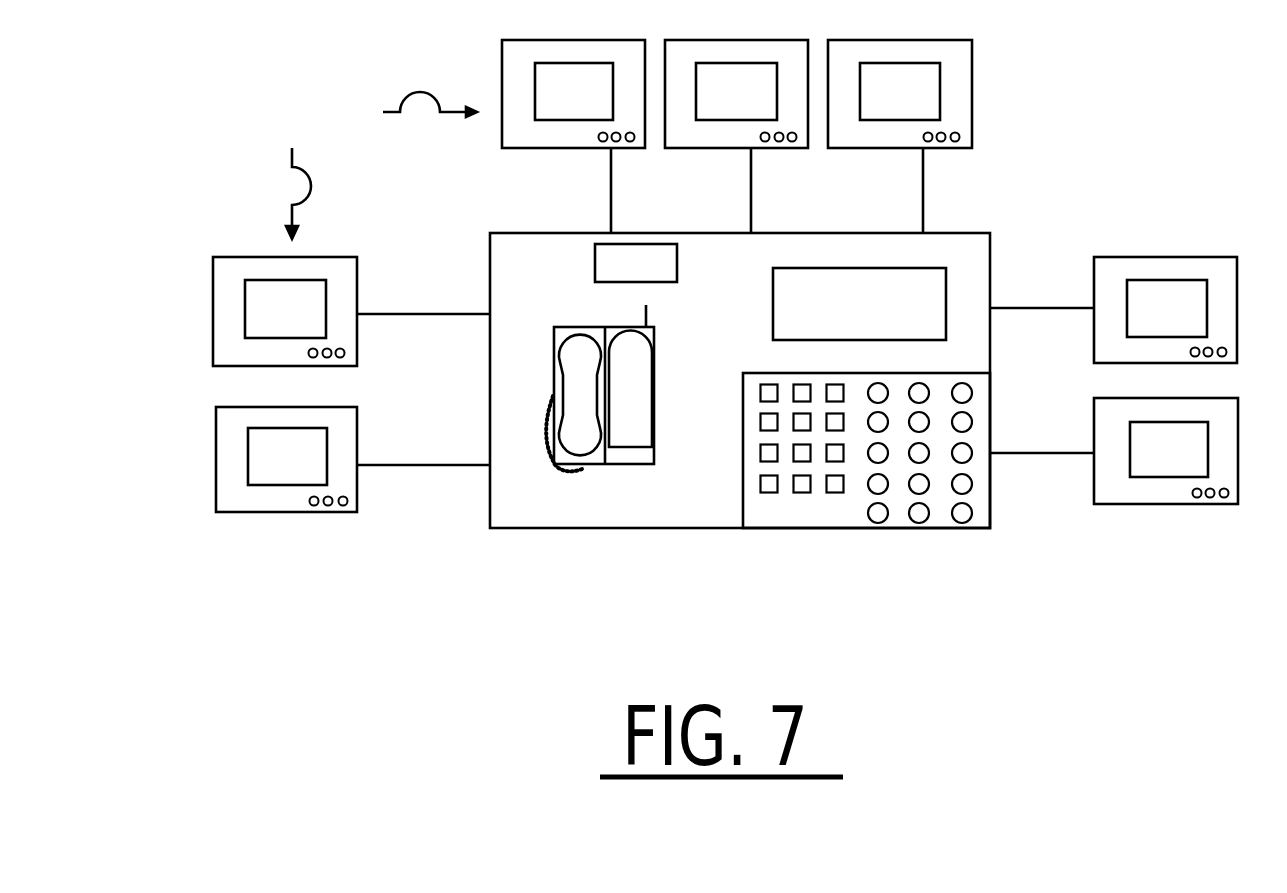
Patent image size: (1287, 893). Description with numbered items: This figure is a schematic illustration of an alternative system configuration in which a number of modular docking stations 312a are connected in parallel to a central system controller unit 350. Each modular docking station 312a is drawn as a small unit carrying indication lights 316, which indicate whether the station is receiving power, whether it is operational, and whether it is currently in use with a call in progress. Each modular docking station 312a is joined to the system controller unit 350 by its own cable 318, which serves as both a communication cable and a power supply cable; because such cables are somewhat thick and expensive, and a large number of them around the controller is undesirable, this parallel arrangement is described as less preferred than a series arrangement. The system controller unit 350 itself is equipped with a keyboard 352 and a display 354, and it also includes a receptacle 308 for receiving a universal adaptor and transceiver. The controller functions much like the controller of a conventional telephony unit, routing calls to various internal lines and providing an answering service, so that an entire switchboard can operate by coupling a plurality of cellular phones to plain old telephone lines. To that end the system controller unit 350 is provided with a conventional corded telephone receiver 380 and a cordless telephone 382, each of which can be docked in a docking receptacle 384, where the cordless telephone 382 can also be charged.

The receptacle 308 is at (613, 265).
The modular docking station 312a is at (379, 162).
The indication lights 316 is at (343, 506).
The cable 318 is at (453, 473).
The system controller unit 350 is at (655, 520).
The keyboard 352 is at (813, 513).
The display 354 is at (925, 293).
The conventional telephone receiver 380 is at (573, 447).
The cordless telephone 382 is at (628, 385).
The docking receptacle 384 is at (623, 455).